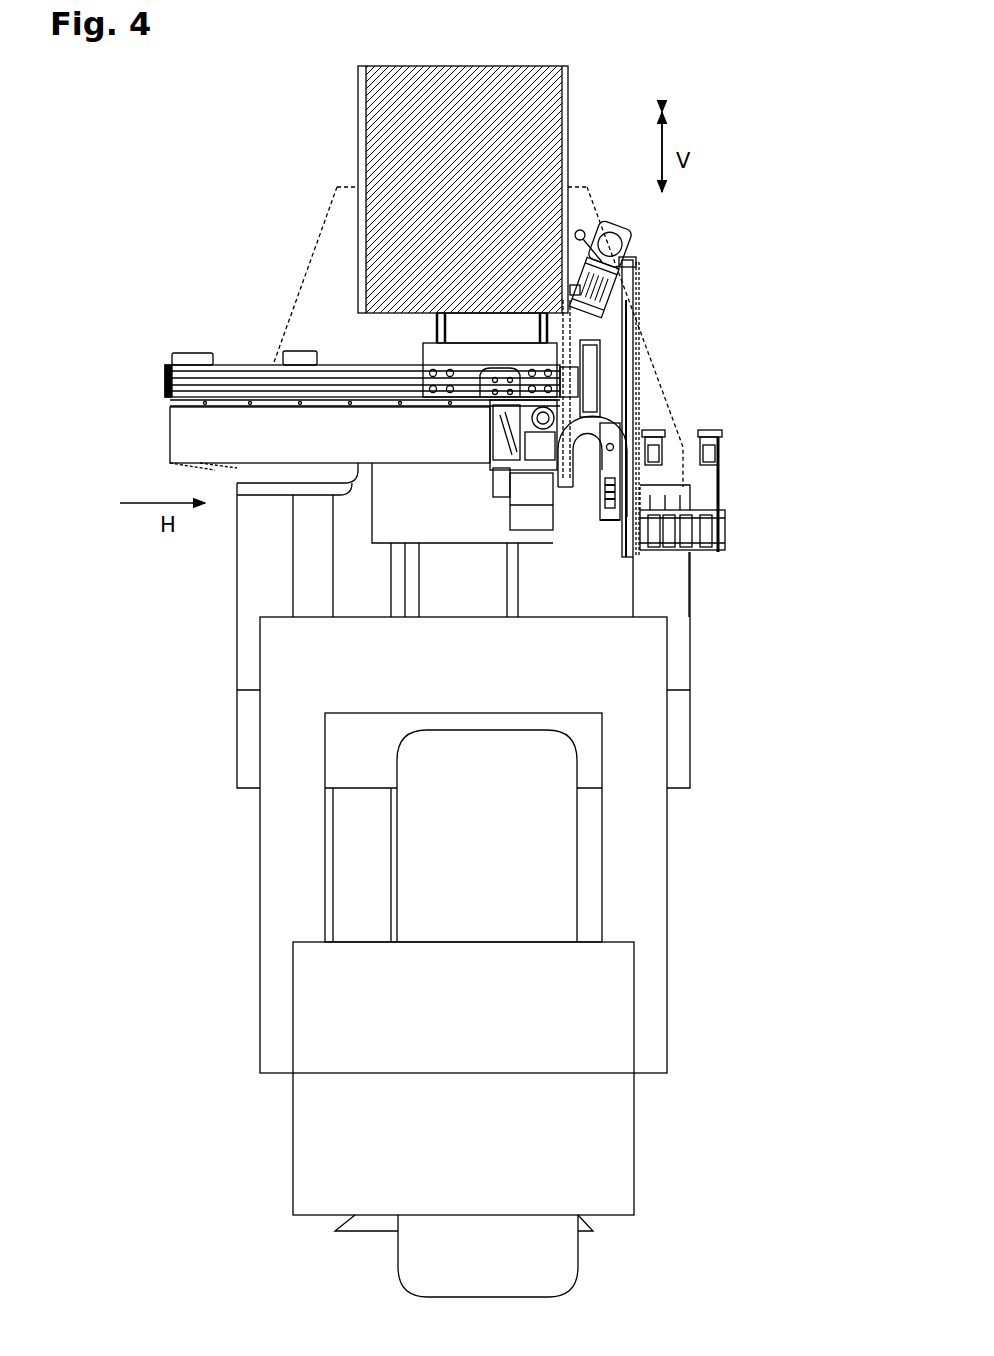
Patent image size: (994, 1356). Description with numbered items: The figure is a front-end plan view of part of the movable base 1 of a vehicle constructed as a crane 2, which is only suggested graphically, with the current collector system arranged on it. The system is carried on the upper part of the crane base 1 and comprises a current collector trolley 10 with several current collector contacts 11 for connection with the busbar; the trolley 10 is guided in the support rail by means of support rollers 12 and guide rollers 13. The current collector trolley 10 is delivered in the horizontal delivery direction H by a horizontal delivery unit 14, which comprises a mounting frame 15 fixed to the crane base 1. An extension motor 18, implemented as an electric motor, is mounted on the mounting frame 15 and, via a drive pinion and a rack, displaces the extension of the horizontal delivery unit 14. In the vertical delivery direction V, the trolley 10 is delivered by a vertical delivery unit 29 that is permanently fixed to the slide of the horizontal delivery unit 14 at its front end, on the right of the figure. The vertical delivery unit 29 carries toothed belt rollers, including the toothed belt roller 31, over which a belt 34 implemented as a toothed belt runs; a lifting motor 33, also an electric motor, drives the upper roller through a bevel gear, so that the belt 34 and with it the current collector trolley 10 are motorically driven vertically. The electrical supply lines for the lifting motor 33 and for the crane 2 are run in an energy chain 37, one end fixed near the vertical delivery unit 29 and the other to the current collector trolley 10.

The movable base 1 is at (754, 796).
The crane 2 is at (358, 108).
The current collector trolley 10 is at (724, 530).
The current collector contacts 11 is at (700, 503).
The support rollers 12 is at (722, 450).
The guide rollers 13 is at (722, 435).
The horizontal delivery unit 14 is at (188, 332).
The mounting frame 15 is at (437, 330).
The extension motor 18 is at (510, 525).
The vertical delivery unit 29 is at (688, 287).
The toothed belt roller 31 is at (597, 472).
The lifting motor 33 is at (624, 243).
The belt 34 is at (636, 340).
The energy chain 37 is at (622, 490).